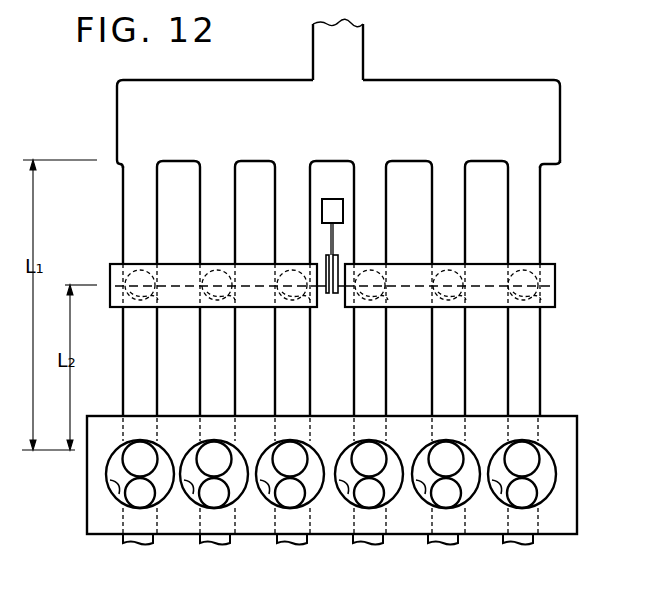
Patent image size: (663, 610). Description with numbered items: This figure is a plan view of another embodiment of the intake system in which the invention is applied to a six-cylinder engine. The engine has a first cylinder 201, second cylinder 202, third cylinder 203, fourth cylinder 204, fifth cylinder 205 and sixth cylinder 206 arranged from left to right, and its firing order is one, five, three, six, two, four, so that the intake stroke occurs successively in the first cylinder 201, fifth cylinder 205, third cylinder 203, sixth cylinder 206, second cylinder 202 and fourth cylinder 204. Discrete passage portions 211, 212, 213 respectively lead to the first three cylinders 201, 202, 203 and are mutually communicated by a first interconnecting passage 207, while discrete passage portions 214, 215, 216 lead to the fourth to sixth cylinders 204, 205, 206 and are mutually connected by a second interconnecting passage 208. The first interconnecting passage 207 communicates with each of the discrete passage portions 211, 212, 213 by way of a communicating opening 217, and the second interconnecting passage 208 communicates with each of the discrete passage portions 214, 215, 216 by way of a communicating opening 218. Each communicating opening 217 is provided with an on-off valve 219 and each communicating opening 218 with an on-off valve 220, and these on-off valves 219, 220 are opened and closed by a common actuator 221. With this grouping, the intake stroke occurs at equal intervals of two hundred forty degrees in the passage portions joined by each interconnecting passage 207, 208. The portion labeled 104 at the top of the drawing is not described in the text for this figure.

The yoke connecting tab 104 is at (453, 0).
The first cylinder 201 is at (118, 490).
The second cylinder 202 is at (195, 490).
The third cylinder 203 is at (272, 490).
The fourth cylinder 204 is at (350, 500).
The fifth cylinder 205 is at (423, 500).
The sixth cylinder 206 is at (502, 500).
The first interconnecting passage 207 is at (110, 264).
The second interconnecting passage 208 is at (555, 280).
The discrete passage portion 211 is at (123, 182).
The discrete passage portion 212 is at (201, 185).
The discrete passage portion 213 is at (275, 185).
The discrete passage portion 214 is at (386, 187).
The discrete passage portion 215 is at (461, 187).
The discrete passage portion 216 is at (532, 182).
The communicating opening 217 is at (196, 312).
The communicating opening 218 is at (422, 316).
The on-off valve 219 is at (195, 268).
The on-off valve 220 is at (440, 268).
The actuator 221 is at (332, 199).